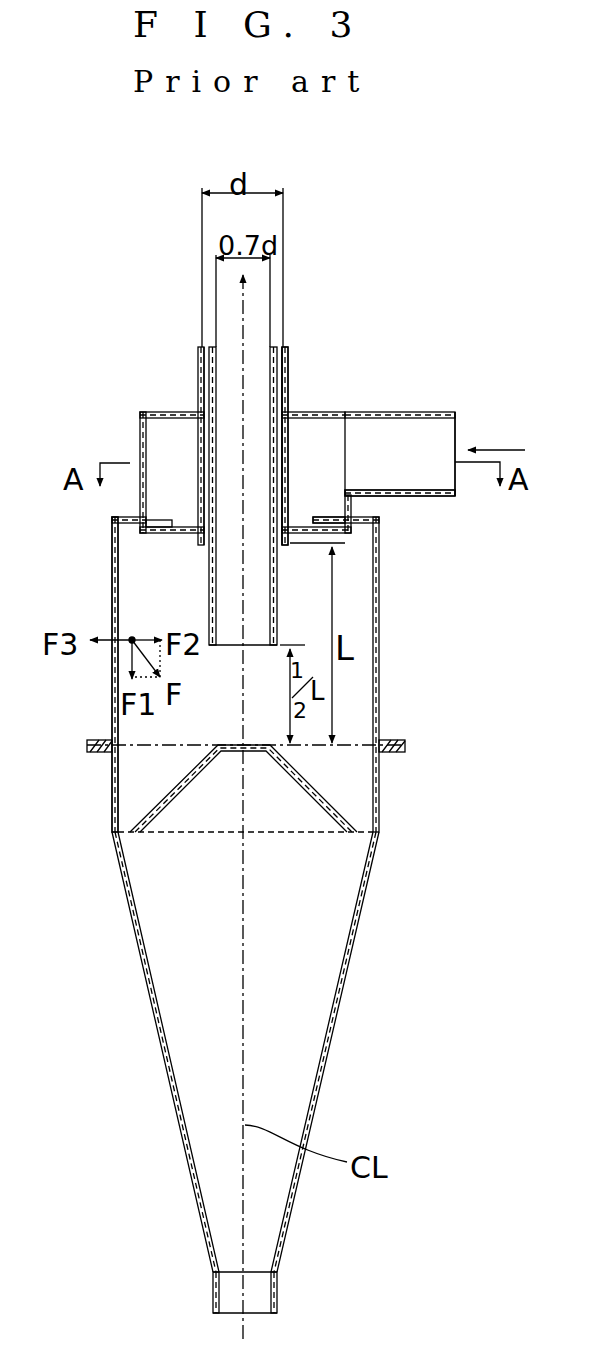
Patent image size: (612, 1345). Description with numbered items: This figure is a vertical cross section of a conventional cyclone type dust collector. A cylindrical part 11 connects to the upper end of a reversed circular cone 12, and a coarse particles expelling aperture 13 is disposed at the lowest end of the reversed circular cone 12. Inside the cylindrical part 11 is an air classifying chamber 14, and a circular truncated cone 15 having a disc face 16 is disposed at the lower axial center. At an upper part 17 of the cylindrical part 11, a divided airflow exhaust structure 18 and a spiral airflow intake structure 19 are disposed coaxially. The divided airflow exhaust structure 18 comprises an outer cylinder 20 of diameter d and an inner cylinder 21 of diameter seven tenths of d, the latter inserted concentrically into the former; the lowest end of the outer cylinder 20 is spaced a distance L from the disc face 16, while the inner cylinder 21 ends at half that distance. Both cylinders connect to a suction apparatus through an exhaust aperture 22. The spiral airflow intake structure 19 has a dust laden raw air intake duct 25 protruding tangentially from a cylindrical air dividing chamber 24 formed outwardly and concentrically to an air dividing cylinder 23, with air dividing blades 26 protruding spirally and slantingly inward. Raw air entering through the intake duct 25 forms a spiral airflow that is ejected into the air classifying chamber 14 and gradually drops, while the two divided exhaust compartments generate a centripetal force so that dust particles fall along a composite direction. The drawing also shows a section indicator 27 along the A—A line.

The cylindrical part 11 is at (112, 688).
The reversed circular cone 12 is at (348, 952).
The coarse particles expelling aperture 13 is at (255, 1293).
The air classifying chamber 14 is at (362, 680).
The circular truncated cone 15 is at (318, 797).
The disc face 16 is at (237, 745).
The upper part 17 is at (113, 548).
The divided airflow exhaust structure 18 is at (294, 371).
The spiral airflow intake structure 19 is at (326, 404).
The outer cylinder 20 is at (197, 402).
The inner cylinder 21 is at (199, 375).
The exhaust aperture 22 is at (275, 340).
The air dividing cylinder 23 is at (140, 432).
The cylindrical air dividing chamber 24 is at (318, 476).
The dust laden raw air intake duct 25 is at (395, 497).
The air dividing blades 26 is at (152, 533).
The inlet opening 27 is at (455, 440).